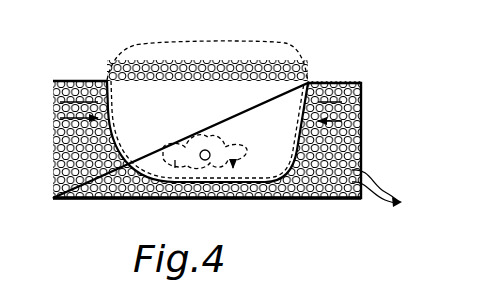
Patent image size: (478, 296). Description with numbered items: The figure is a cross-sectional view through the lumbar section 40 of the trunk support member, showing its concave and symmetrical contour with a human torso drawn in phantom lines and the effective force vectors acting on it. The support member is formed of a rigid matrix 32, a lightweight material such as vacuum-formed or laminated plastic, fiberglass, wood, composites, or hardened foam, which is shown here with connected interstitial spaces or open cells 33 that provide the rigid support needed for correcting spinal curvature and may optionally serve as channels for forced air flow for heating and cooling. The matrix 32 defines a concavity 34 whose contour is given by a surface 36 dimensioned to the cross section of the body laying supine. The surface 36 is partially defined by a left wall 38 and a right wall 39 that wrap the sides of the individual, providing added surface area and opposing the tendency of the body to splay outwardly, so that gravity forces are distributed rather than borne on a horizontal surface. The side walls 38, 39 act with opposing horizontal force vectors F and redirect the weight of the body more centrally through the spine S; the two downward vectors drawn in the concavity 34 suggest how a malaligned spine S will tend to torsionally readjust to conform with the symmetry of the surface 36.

The matrix 32 is at (309, 190).
The open cells 33 is at (393, 194).
The concavity 34 is at (198, 122).
The surface 36 is at (268, 190).
The left wall 38 is at (297, 133).
The right wall 39 is at (108, 100).
The lumbar section 40 is at (376, 153).
The horizontal force vectors F is at (328, 112).
The spine S is at (180, 145).